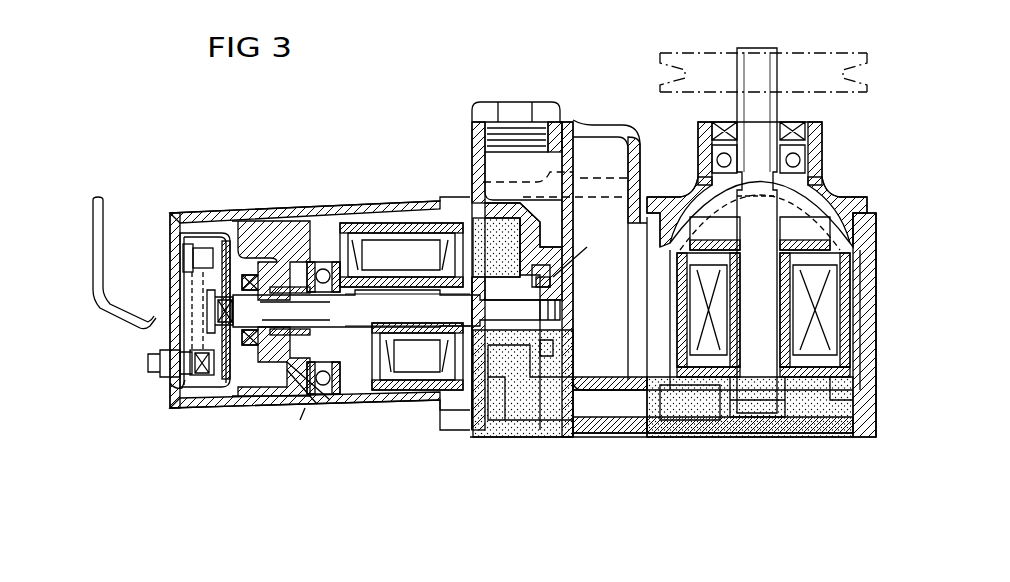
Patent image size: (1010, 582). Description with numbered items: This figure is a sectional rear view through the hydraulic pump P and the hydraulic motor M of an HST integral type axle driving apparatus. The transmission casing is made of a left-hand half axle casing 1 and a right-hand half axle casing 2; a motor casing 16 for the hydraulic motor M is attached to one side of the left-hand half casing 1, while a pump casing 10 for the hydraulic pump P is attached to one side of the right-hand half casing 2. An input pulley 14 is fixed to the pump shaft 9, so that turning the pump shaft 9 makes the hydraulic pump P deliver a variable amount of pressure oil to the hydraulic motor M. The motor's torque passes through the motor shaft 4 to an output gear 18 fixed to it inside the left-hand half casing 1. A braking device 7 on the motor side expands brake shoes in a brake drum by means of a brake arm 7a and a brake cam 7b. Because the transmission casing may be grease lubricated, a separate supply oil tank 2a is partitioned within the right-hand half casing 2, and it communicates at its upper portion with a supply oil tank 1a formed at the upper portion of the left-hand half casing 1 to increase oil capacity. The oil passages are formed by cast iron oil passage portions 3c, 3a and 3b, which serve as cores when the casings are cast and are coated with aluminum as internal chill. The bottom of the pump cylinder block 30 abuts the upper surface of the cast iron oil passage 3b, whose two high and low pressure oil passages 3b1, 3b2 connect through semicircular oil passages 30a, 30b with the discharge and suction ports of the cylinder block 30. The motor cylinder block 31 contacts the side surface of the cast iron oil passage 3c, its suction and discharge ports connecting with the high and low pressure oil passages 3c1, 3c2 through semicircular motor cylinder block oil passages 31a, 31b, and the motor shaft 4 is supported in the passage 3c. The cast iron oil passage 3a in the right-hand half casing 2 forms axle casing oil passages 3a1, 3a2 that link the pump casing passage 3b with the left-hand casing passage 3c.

The hydraulic motor M is at (390, 186).
The hydraulic pump P is at (892, 212).
The left-hand half axle casing 1 is at (472, 139).
The supply oil tank 1a is at (525, 181).
The right-hand half axle casing 2 is at (648, 157).
The supply oil tank 2a is at (620, 308).
The cast iron oil passage 3a is at (625, 455).
The axle casing oil passage 3a1 is at (610, 405).
The axle casing oil passage 3a2 is at (615, 433).
The cast iron oil passage 3b is at (750, 461).
The high pressure oil passage 3b1 is at (750, 411).
The low pressure oil passage 3b2 is at (718, 433).
The cast iron oil passage 3c is at (523, 422).
The high pressure oil passage 3c1 is at (523, 383).
The low pressure oil passage 3c2 is at (494, 405).
The motor shaft 4 is at (406, 322).
The braking device 7 is at (201, 238).
The brake arm 7a is at (92, 225).
The brake cam 7b is at (155, 376).
The pump shaft 9 is at (779, 80).
The pump casing 10 is at (877, 258).
The input pulley 14 is at (866, 55).
The motor casing 16 is at (318, 408).
The output gear 18 is at (555, 354).
The cylinder block 30 is at (855, 330).
The semicircular oil passage 30a is at (825, 407).
The semicircular oil passage 30b is at (810, 398).
The cylinder block 31 is at (428, 395).
The motor cylinder block oil passage 31a is at (582, 240).
The motor cylinder block oil passage 31b is at (559, 267).